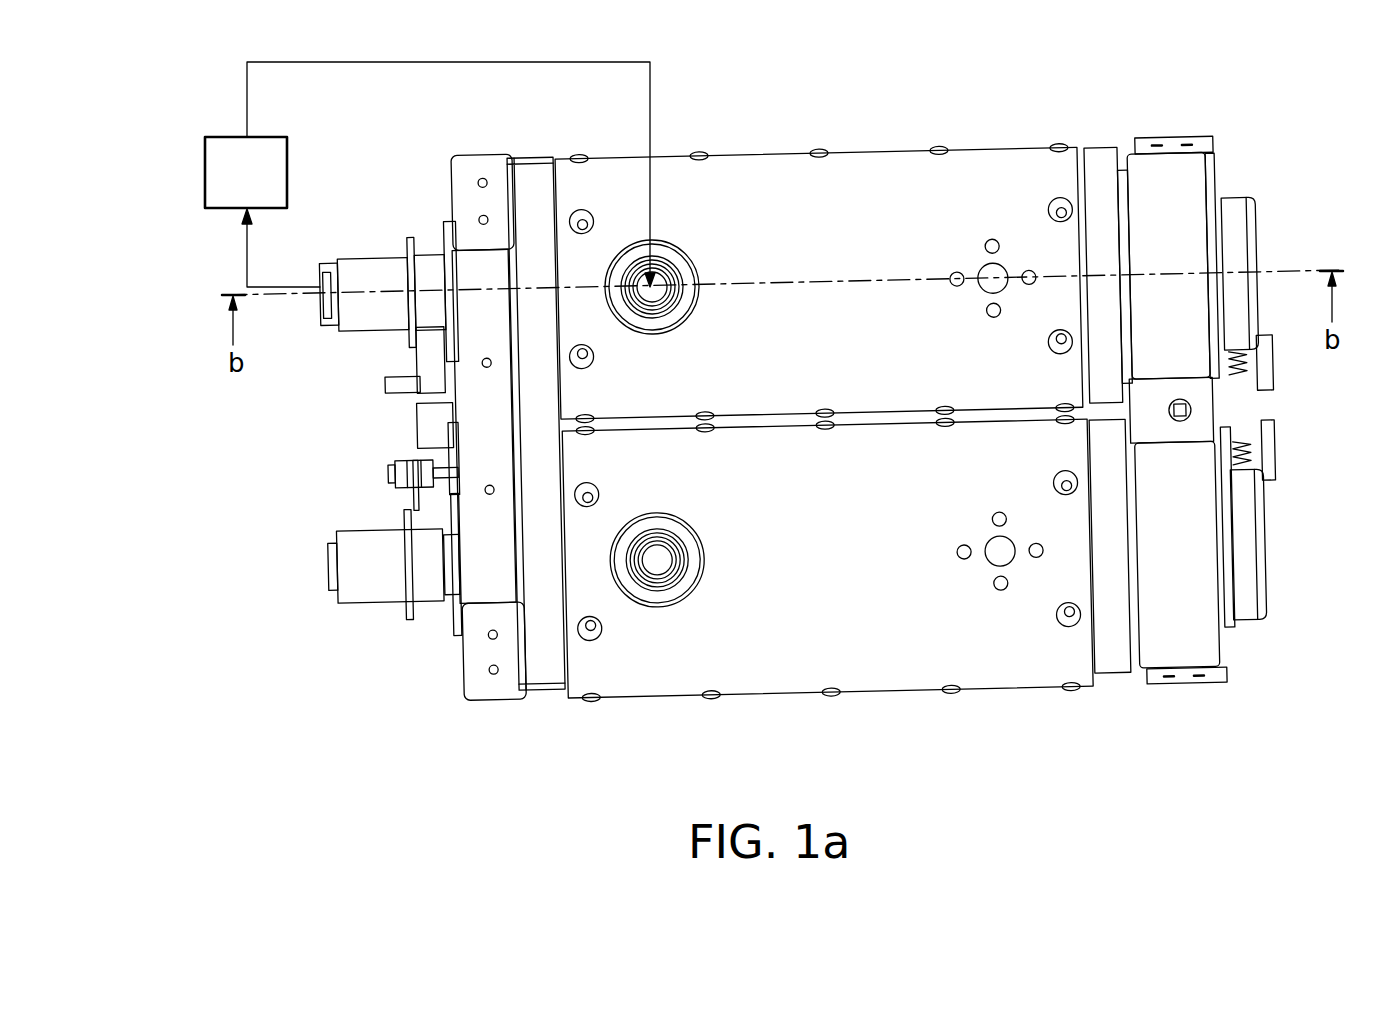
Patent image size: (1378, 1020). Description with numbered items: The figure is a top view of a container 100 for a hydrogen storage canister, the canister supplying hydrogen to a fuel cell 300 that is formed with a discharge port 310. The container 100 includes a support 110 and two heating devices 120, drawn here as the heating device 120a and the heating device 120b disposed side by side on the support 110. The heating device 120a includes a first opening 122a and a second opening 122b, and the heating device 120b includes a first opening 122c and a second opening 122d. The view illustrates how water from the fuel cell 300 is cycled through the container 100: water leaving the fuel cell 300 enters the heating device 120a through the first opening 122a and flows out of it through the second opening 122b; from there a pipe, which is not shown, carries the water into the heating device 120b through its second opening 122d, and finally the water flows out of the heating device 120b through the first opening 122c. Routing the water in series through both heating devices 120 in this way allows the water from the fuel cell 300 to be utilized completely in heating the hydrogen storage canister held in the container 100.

The container 100 is at (1062, 134).
The support 110 is at (480, 660).
The heating devices 120 is at (858, 160).
The heating device 120a is at (819, 231).
The heating device 120b is at (890, 663).
The first opening 122a is at (662, 270).
The second opening 122b is at (1003, 272).
The first opening 122c is at (665, 565).
The second opening 122d is at (1005, 558).
The fuel cell 300 is at (205, 177).
The discharge port 310 is at (248, 138).